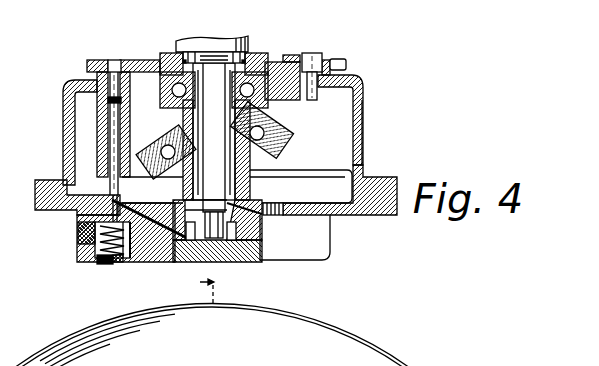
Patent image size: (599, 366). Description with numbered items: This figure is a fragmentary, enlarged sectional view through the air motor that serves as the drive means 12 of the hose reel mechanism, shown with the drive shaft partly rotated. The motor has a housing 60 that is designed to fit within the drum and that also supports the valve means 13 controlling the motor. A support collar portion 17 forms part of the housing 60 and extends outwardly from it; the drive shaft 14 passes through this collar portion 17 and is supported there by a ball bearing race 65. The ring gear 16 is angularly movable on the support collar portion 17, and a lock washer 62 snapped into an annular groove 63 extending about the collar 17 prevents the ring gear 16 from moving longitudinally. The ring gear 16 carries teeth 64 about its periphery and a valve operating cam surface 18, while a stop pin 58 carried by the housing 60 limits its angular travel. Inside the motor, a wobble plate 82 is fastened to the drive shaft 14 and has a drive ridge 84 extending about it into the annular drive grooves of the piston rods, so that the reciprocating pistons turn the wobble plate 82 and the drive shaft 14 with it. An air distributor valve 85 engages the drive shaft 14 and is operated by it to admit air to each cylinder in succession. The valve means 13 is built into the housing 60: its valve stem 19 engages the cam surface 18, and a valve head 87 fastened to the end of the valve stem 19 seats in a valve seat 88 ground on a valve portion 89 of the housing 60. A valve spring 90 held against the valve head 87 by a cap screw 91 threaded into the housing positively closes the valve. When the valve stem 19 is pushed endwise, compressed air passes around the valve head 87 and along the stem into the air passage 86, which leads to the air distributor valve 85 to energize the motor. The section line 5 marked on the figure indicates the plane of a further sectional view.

The section line 5— 5 is at (201, 289).
The drive means 12 is at (368, 146).
The valve means 13 is at (77, 282).
The drive shaft 14 is at (218, 152).
The ring gear 16 is at (340, 62).
The support collar portion 17 is at (250, 50).
The valve operating cam surface 18 is at (117, 62).
The valve stem 19 is at (110, 118).
The stop pin 58 is at (313, 54).
The housing 60 is at (365, 107).
The lock washer 62 is at (278, 62).
The annular groove 63 is at (262, 56).
The teeth 64 is at (347, 65).
The ball bearing race 65 is at (178, 103).
The wobble plate 82 is at (258, 145).
The drive ridge 84 is at (280, 123).
The air distributor valve 85 is at (233, 256).
The air passage 86 is at (158, 216).
The valve head 87 is at (95, 258).
The valve seat 88 is at (78, 222).
The valve portion 89 is at (137, 255).
The valve spring 90 is at (114, 260).
The cap screw 91 is at (127, 260).